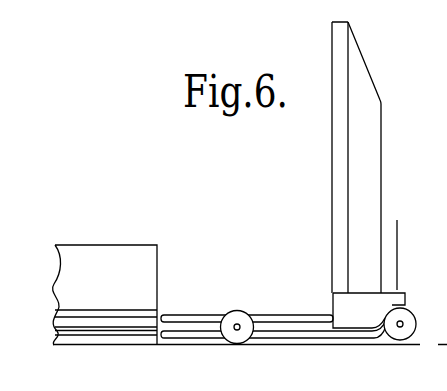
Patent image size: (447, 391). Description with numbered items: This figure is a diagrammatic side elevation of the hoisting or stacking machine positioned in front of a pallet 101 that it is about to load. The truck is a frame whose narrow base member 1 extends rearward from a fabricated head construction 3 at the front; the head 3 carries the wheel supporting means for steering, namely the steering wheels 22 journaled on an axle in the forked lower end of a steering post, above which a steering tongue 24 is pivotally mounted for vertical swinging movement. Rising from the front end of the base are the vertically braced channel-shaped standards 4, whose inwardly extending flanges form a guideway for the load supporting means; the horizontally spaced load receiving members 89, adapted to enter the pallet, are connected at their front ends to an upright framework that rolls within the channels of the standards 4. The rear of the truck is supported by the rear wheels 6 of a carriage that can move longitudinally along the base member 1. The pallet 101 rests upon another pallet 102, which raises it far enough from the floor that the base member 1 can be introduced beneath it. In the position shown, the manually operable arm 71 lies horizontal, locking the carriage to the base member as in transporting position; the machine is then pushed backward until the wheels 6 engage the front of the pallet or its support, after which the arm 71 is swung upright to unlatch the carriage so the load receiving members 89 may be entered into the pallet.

The base member 1 is at (303, 335).
The head construction 3 is at (370, 305).
The standards 4 is at (336, 182).
The rear wheels 6 is at (238, 338).
The steering wheels 22 is at (400, 336).
The steering tongue 24 is at (397, 257).
The manually operable arm 71 is at (357, 157).
The load receiving members 89 is at (268, 322).
The pallet 101 is at (137, 317).
The pallet 102 is at (133, 335).